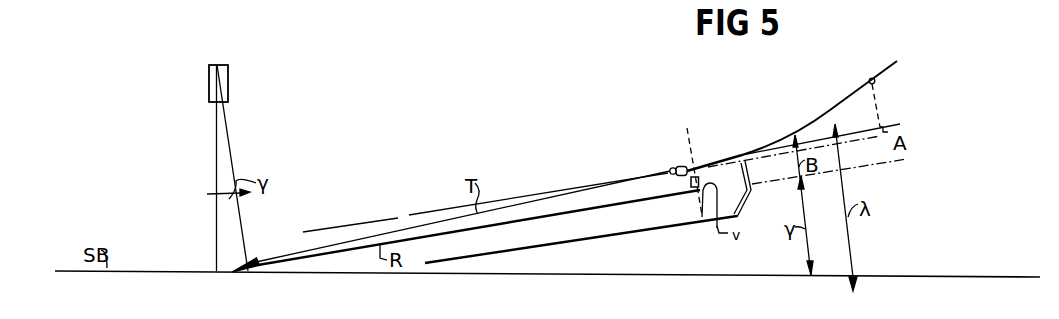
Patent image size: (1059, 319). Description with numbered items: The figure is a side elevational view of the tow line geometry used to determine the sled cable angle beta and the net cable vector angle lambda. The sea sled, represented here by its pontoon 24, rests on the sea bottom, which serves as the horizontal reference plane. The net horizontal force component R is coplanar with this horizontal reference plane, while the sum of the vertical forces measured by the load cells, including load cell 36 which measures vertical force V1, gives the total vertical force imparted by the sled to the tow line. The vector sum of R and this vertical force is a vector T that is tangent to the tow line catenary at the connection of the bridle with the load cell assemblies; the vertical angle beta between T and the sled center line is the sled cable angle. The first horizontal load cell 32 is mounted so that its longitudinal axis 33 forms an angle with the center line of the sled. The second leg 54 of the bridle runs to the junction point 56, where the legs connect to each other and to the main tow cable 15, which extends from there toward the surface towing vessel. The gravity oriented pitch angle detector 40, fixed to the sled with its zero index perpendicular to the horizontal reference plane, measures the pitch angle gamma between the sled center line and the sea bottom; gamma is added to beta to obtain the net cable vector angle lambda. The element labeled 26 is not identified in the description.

The tow cable 15 is at (886, 67).
The pontoon 24 is at (636, 230).
The frame 26 is at (439, 4).
The first horizontal load cell 32 is at (672, 165).
The longitudinal axis 33 is at (782, 153).
The load cell 36 is at (699, 180).
The pitch angle detector 40 is at (229, 80).
The second leg 54 is at (827, 112).
The junction point 56 is at (868, 78).